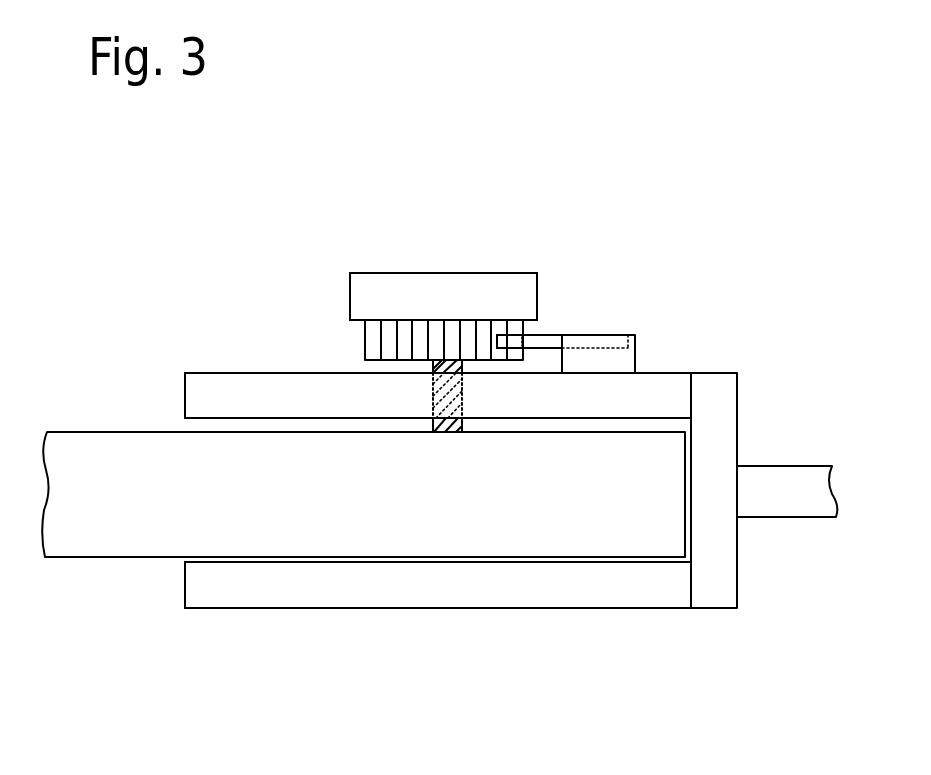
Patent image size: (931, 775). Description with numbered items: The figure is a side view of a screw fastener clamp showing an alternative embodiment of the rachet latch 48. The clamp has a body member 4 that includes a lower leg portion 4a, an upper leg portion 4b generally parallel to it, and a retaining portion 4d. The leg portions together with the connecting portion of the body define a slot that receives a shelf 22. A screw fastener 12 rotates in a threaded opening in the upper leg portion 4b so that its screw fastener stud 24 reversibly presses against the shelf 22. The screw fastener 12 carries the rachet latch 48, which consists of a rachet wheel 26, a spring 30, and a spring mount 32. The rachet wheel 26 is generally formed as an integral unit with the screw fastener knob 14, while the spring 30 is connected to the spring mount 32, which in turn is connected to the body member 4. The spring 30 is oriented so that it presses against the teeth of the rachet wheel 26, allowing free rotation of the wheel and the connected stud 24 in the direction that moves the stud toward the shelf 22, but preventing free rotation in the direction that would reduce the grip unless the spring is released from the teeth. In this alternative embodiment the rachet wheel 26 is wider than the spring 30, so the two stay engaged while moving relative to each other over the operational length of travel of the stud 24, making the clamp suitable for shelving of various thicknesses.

The body member 4 is at (535, 618).
The lower leg portion 4a is at (223, 588).
The upper leg portion 4b is at (208, 398).
The retaining portion 4d is at (760, 495).
The screw fastener 12 is at (404, 262).
The screw fastener knob 14 is at (365, 298).
The shelf 22 is at (478, 498).
The screw fastener stud 24 is at (435, 366).
The rachet wheel 26 is at (517, 328).
The spring 30 is at (545, 338).
The spring mount 32 is at (608, 362).
The rachet latch 48 is at (355, 333).